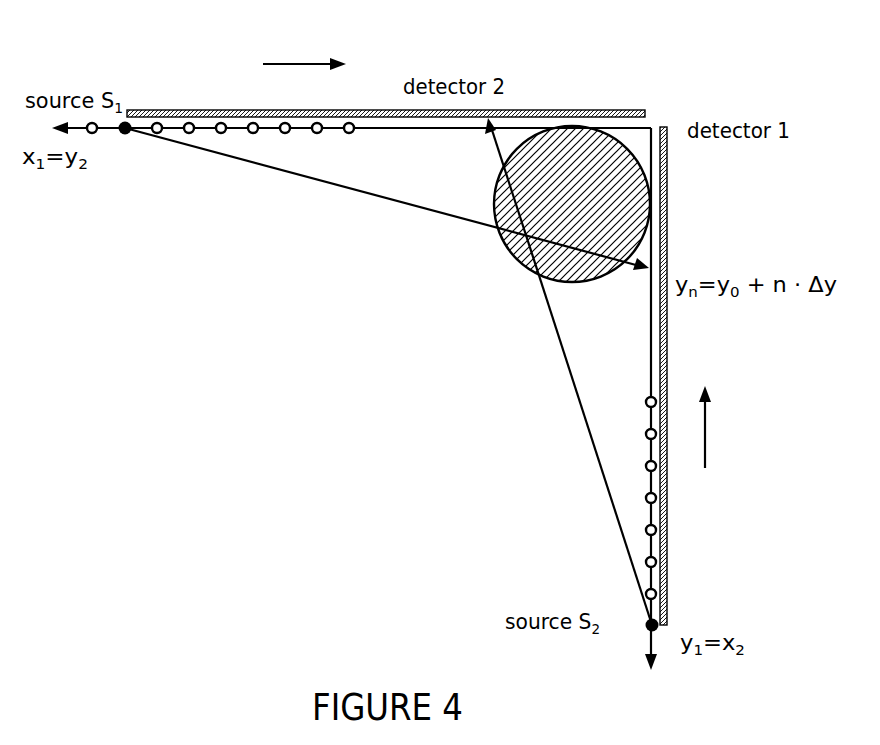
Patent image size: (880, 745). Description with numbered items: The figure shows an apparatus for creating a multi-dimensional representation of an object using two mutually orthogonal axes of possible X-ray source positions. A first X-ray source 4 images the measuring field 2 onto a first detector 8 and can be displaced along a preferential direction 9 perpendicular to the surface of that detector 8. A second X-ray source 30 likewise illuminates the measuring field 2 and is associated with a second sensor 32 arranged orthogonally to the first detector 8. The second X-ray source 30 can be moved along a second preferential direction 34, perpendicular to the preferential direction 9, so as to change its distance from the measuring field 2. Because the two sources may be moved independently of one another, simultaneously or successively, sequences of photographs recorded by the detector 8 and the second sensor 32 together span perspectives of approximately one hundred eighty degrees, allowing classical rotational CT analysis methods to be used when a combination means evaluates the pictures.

The X-ray source 4 is at (128, 121).
The preferential direction 9 is at (276, 62).
The second sensor 32 is at (540, 110).
The measuring field 2 is at (623, 165).
The detector 8 is at (668, 226).
The second preferential direction 34 is at (706, 432).
The second X-ray source 30 is at (648, 631).